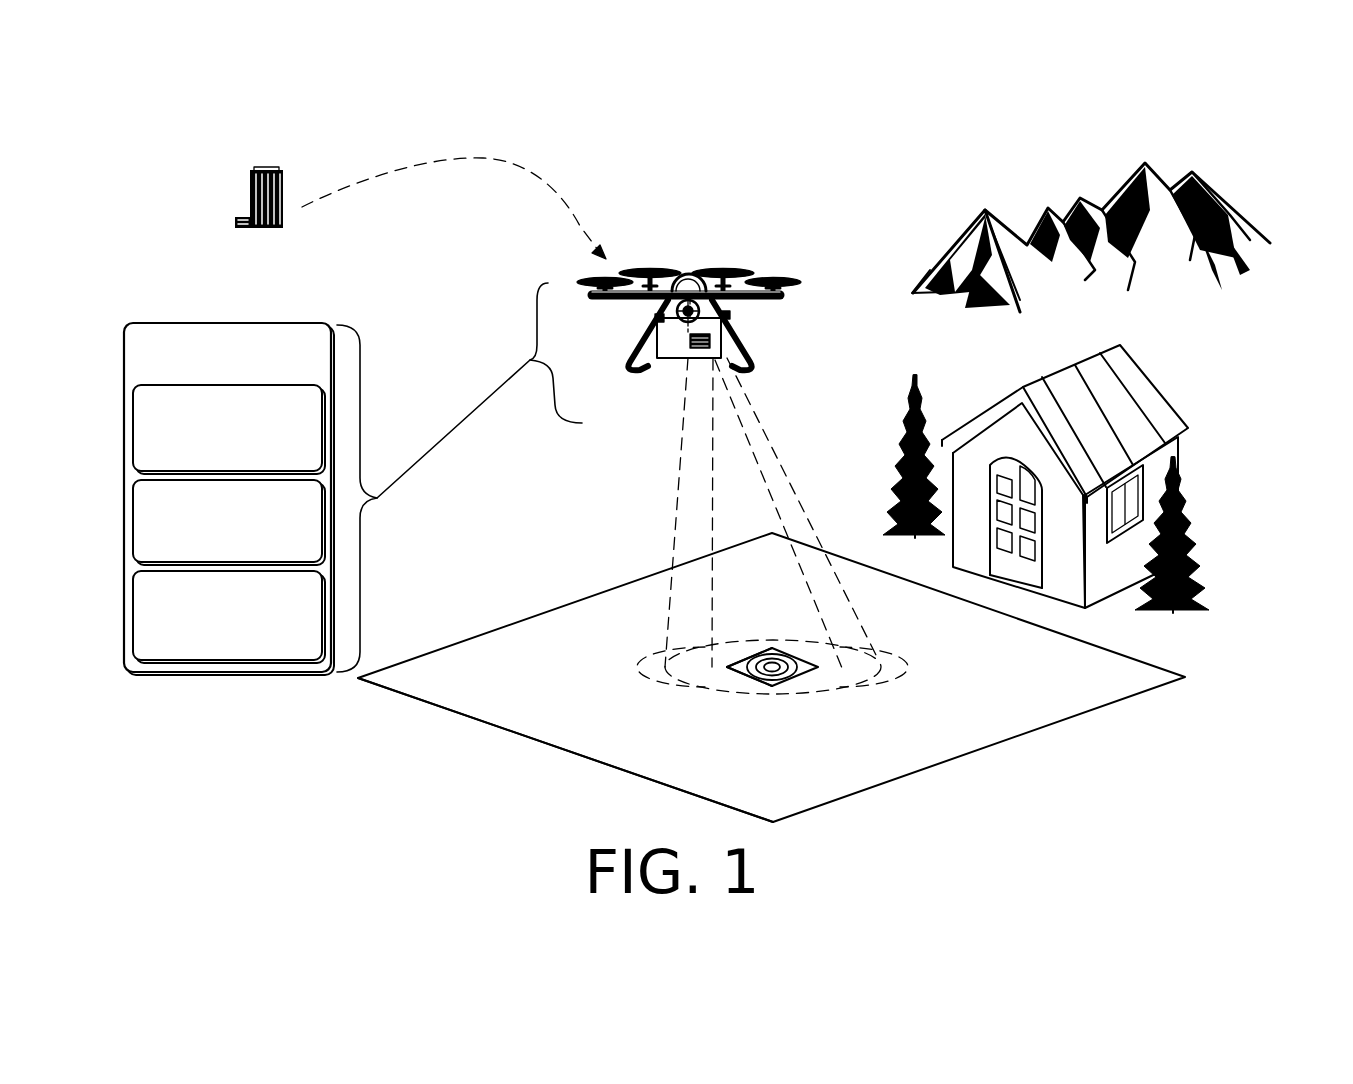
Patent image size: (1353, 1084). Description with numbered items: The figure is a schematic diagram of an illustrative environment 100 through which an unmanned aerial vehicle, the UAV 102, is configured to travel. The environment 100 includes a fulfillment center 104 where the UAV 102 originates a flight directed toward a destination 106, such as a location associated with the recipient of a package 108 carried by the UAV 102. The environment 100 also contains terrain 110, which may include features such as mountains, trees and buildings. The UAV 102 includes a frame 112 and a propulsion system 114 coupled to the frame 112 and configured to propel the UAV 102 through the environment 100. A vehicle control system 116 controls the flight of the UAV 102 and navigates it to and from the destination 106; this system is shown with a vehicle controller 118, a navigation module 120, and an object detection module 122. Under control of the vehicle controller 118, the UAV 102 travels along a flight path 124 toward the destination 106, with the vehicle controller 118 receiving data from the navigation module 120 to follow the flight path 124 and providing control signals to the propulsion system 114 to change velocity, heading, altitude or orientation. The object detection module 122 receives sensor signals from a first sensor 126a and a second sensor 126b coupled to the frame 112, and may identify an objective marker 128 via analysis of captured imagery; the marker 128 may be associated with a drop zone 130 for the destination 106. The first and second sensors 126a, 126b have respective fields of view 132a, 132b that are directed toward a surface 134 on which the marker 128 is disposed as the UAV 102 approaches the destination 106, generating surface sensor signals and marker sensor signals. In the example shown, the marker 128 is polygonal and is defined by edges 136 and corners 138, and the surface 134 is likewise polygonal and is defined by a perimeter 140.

The environment 100 is at (758, 170).
The unmanned aerial vehicle 102 is at (699, 285).
The fulfillment center 104 is at (267, 227).
The destination 106 is at (896, 673).
The package 108 is at (657, 360).
The terrain 110 is at (1020, 207).
The frame 112 is at (738, 342).
The propulsion system 114 is at (745, 266).
The vehicle control system 116 is at (353, 479).
The vehicle controller 118 is at (229, 429).
The navigation module 120 is at (229, 522).
The object detection module 122 is at (229, 617).
The flight path 124 is at (448, 162).
The first sensor 126a is at (657, 324).
The second sensor 126b is at (731, 318).
The objective marker 128 is at (793, 673).
The drop zone 130 is at (797, 696).
The first field of view 132a is at (675, 488).
The second field of view 132b is at (778, 432).
The surface 134 is at (622, 602).
The edges 136 is at (728, 668).
The corners 138 is at (773, 685).
The perimeter 140 is at (622, 768).